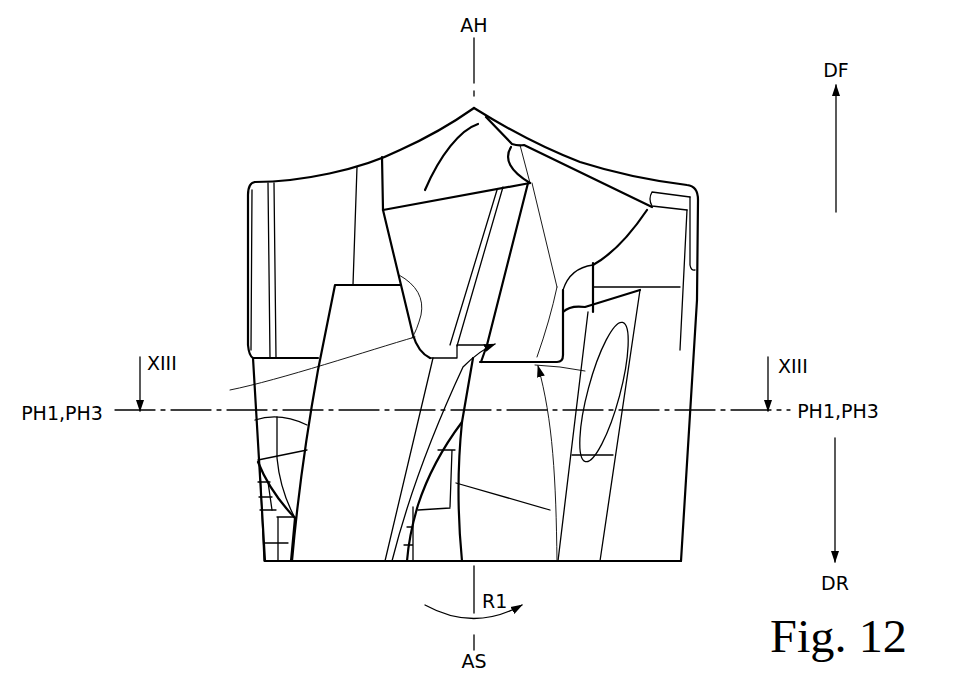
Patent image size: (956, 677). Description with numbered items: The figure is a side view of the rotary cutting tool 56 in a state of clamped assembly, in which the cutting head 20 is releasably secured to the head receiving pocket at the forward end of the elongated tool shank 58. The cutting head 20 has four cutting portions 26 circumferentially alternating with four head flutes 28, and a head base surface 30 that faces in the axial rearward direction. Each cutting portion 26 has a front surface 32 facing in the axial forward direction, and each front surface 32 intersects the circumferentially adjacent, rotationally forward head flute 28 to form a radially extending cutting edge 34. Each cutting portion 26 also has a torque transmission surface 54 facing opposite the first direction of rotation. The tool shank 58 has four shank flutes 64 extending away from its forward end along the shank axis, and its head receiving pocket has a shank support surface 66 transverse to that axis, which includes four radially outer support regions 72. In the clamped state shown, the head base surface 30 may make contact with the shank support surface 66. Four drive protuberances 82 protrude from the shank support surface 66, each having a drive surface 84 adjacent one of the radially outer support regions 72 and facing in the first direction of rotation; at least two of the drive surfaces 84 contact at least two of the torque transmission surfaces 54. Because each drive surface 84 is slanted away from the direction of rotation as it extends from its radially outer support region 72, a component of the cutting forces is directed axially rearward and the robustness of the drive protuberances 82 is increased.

The cutting head 20 is at (672, 237).
The cutting portion 26 is at (743, 164).
The head flute 28 is at (446, 264).
The head base surface 30 is at (557, 561).
The front surface 32 is at (728, 131).
The cutting edge 34 is at (318, 176).
The torque transmission surface 54 is at (307, 370).
The rotary cutting tool 56 is at (590, 122).
The tool shank 58 is at (655, 457).
The shank flute 64 is at (520, 459).
The shank support surface 66 is at (392, 561).
The radially outer support region 72 is at (385, 561).
The drive protuberance 82 is at (346, 423).
The drive surface 84 is at (397, 272).